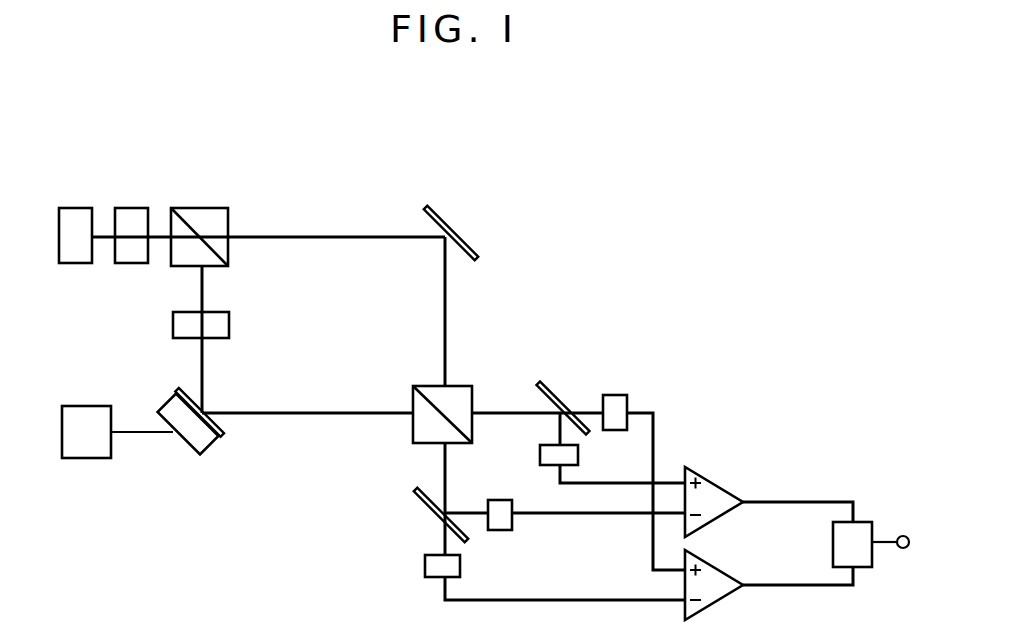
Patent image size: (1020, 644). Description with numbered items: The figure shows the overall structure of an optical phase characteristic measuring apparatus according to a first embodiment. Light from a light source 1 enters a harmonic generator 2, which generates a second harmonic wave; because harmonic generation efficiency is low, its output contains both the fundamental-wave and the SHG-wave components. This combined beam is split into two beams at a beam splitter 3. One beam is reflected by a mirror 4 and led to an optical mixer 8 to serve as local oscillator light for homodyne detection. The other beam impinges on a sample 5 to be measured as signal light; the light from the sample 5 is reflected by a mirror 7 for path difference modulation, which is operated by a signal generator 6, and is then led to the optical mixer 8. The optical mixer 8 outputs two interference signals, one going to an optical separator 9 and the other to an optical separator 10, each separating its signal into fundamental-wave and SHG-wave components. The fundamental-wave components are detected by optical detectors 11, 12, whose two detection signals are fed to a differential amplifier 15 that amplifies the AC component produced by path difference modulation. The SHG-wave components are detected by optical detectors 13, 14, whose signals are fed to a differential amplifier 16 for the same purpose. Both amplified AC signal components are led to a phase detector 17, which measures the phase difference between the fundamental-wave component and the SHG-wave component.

The light source 1 is at (78, 215).
The harmonic generator 2 is at (136, 215).
The beam splitter 3 is at (207, 213).
The mirror 4 is at (466, 248).
The sample 5 is at (222, 327).
The signal generator 6 is at (80, 413).
The mirror for path difference modulation 7 is at (168, 413).
The optical mixer 8 is at (430, 393).
The optical separator 9 is at (550, 394).
The optical separator 10 is at (418, 496).
The optical detector 11 is at (543, 458).
The optical detector 12 is at (505, 522).
The optical detector 13 is at (618, 404).
The optical detector 14 is at (435, 568).
The differential amplifier 15 is at (723, 498).
The differential amplifier 16 is at (717, 586).
The phase detector 17 is at (857, 530).